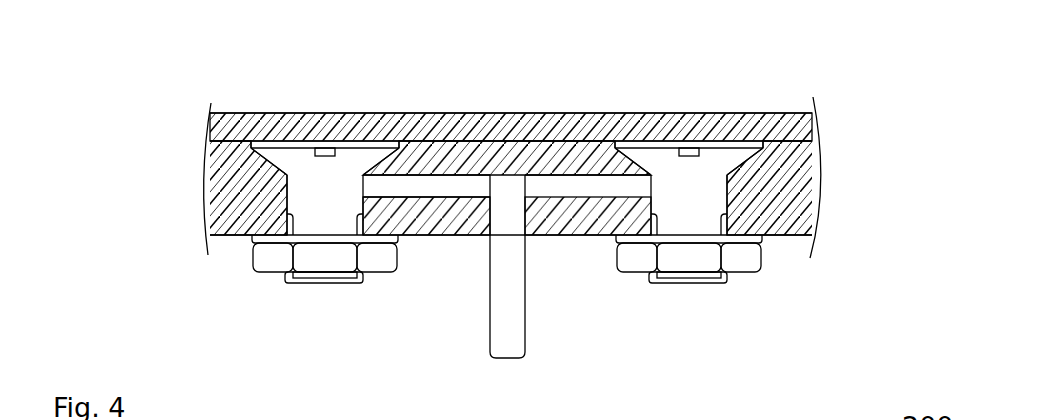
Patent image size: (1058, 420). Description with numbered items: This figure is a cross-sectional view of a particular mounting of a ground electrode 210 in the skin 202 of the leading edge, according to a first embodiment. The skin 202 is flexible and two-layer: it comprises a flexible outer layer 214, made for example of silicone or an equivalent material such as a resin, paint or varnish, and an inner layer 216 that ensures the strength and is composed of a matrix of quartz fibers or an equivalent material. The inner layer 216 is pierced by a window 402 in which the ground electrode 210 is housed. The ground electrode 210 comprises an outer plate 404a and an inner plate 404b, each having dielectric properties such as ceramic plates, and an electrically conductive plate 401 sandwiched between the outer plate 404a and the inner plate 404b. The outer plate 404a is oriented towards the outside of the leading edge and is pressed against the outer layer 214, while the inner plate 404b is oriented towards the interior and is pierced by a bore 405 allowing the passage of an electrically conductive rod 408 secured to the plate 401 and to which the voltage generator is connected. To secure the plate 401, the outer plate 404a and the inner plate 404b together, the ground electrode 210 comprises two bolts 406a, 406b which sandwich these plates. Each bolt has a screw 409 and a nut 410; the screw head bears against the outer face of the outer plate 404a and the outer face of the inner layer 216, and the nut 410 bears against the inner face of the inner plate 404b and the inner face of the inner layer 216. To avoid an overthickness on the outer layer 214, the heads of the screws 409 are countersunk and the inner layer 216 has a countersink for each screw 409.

The skin 202 is at (828, 69).
The ground electrode 210 is at (188, 246).
The outer layer 214 is at (810, 133).
The inner layer 216 is at (803, 205).
The electrically conductive plate 401 is at (582, 183).
The window 402 is at (512, 184).
The outer plate 404a is at (473, 160).
The inner plate 404b is at (568, 212).
The bore 405 is at (478, 212).
The bolt 406a is at (218, 318).
The bolt 406b is at (815, 309).
The electrically conductive rod 408 is at (510, 317).
The screw 409 is at (300, 163).
The nut 410 is at (272, 258).